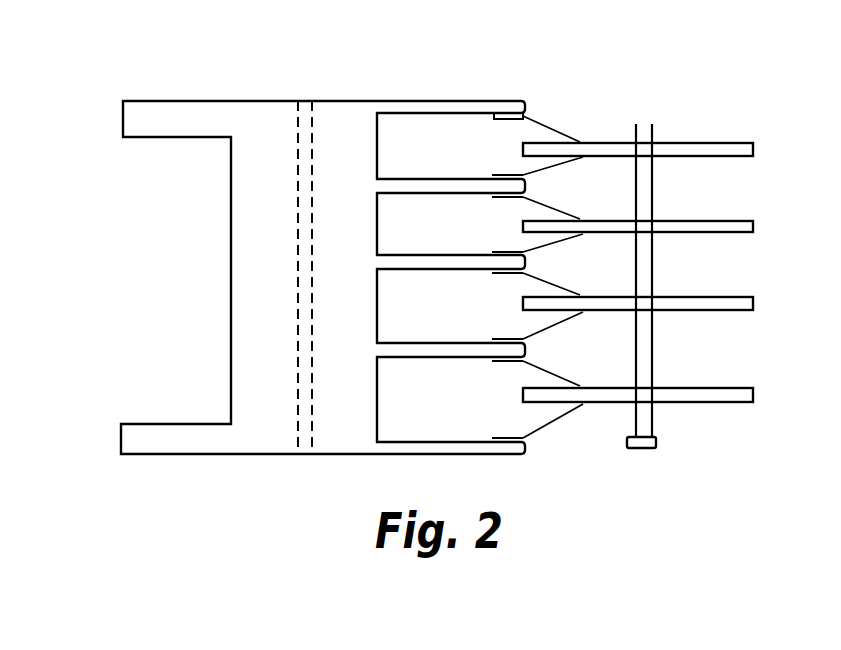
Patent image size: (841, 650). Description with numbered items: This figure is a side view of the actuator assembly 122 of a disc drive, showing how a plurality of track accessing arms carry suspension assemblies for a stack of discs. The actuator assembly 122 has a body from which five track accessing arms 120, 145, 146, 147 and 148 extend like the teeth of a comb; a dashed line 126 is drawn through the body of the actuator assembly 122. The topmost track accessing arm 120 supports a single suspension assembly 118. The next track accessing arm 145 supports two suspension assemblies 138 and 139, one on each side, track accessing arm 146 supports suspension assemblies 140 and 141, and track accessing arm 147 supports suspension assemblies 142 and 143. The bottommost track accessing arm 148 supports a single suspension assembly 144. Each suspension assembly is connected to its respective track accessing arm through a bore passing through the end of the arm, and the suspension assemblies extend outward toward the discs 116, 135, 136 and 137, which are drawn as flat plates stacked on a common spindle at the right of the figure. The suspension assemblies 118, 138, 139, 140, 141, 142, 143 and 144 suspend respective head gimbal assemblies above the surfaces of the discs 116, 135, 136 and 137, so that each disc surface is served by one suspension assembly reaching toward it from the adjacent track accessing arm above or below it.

The disc 116 is at (714, 143).
The suspension assembly 118 is at (558, 117).
The track accessing arm 120 is at (508, 101).
The actuator assembly 122 is at (363, 101).
The fold line 126 is at (304, 101).
The disc 135 is at (728, 221).
The disc 136 is at (730, 297).
The disc 137 is at (728, 388).
The suspension assembly 138 is at (552, 168).
The suspension assembly 139 is at (553, 200).
The suspension assembly 140 is at (553, 250).
The suspension assembly 141 is at (553, 280).
The suspension assembly 142 is at (553, 326).
The suspension assembly 143 is at (550, 368).
The suspension assembly 144 is at (549, 420).
The track accessing arm 145 is at (453, 178).
The track accessing arm 146 is at (468, 255).
The track accessing arm 147 is at (471, 343).
The track accessing arm 148 is at (472, 442).